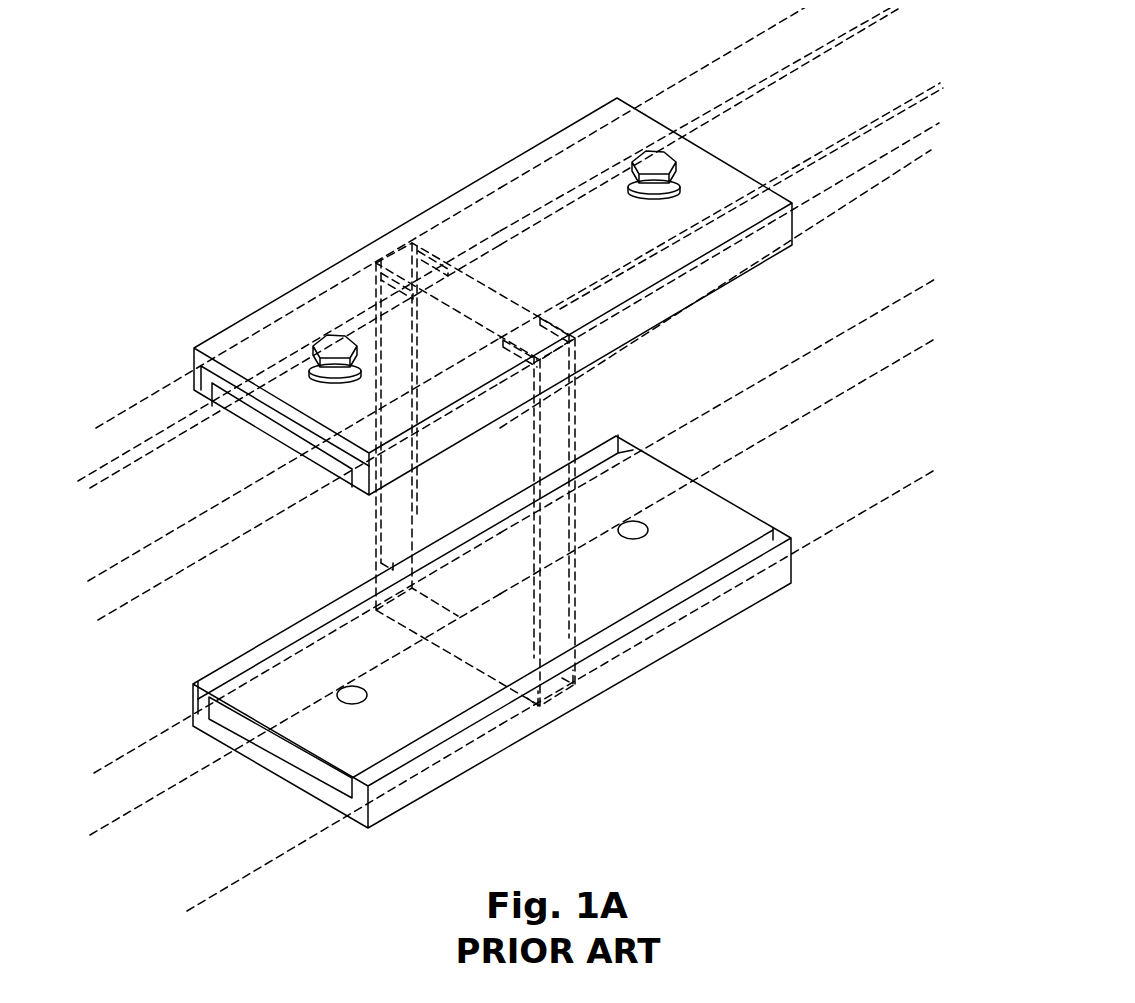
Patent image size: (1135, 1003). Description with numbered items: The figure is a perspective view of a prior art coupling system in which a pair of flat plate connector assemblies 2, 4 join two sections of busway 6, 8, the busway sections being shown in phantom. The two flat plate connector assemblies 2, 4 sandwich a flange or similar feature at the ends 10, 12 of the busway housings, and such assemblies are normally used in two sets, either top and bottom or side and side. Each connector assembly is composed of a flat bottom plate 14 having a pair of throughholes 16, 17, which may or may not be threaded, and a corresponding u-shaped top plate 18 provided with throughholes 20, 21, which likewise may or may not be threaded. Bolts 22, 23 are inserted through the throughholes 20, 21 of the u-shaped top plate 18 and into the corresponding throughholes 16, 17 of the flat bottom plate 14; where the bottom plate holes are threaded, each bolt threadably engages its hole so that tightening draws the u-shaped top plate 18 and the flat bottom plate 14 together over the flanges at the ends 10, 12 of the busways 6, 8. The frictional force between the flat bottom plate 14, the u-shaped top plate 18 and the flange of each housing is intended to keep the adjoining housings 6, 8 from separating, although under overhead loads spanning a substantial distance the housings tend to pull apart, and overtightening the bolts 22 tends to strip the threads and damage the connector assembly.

The flat plate connector assembly 2 is at (495, 69).
The flat plate connector assembly 4 is at (718, 683).
The busway section 6 is at (112, 418).
The busway section 8 is at (712, 63).
The busway housing end 10 is at (422, 318).
The busway housing end 12 is at (480, 310).
The flat bottom plate 14 is at (222, 431).
The throughhole 16 is at (344, 705).
The throughhole 17 is at (647, 525).
The u-shaped top plate 18 is at (423, 217).
The throughhole 20 is at (313, 383).
The throughhole 21 is at (628, 193).
The bolt 22 is at (335, 340).
The bolt 23 is at (658, 160).